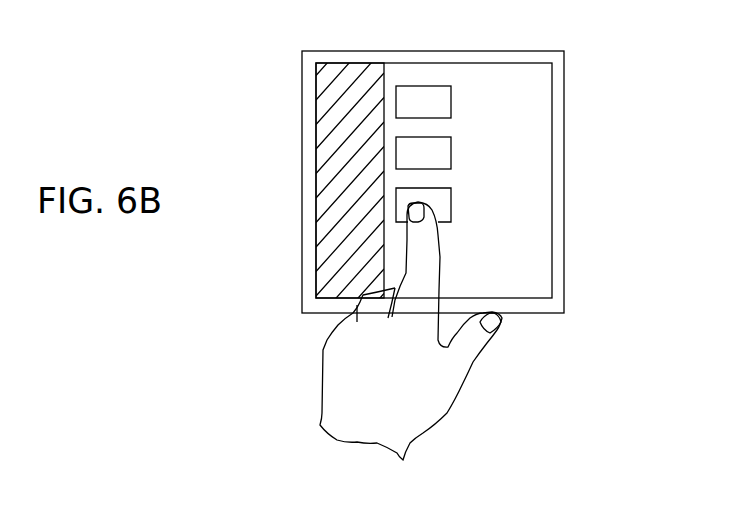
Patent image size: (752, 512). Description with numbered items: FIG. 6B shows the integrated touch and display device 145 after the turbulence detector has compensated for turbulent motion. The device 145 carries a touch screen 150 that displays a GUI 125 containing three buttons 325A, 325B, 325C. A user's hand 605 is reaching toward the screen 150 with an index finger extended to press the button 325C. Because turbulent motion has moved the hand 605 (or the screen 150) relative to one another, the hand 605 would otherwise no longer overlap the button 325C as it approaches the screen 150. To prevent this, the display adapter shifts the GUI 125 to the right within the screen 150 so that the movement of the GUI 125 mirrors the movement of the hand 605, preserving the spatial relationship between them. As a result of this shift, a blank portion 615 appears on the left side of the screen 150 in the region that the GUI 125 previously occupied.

The integrated touch and display device 145 is at (493, 51).
The touch screen 150 is at (552, 152).
The blank portion 615 is at (343, 238).
The button 325A is at (451, 97).
The button 325B is at (451, 150).
The button 325C is at (451, 220).
The GUI 125 is at (510, 247).
The hand 605 is at (323, 390).